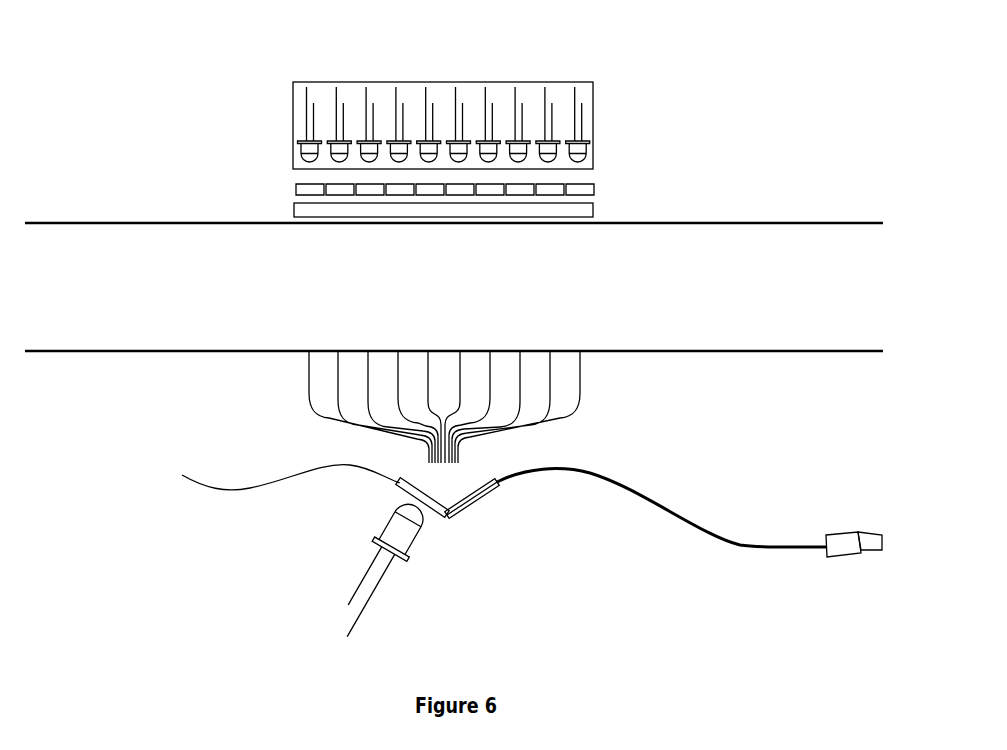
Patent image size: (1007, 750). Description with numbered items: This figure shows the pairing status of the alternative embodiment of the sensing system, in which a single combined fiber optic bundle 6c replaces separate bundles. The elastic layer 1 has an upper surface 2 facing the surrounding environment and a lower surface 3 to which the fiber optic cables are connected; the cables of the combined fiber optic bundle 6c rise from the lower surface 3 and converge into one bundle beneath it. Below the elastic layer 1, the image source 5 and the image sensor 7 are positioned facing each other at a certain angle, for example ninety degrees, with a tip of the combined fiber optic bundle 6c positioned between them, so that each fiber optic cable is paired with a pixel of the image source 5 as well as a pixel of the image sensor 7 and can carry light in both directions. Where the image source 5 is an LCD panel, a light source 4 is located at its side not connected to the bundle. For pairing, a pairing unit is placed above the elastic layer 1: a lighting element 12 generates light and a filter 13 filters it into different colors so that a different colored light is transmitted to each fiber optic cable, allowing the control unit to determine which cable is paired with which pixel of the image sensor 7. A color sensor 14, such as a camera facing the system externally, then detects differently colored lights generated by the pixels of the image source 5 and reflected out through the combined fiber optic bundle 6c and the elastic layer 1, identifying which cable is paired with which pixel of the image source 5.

The elastic layer 1 is at (75, 240).
The upper surface 2 is at (717, 220).
The lower surface 3 is at (67, 351).
The light source 4 is at (405, 530).
The image source 5 is at (400, 490).
The combined fiber optic bundle 6c is at (458, 437).
The image sensor 7 is at (478, 500).
The lighting element 12 is at (322, 110).
The filter 13 is at (305, 185).
The color sensor 14 is at (592, 198).